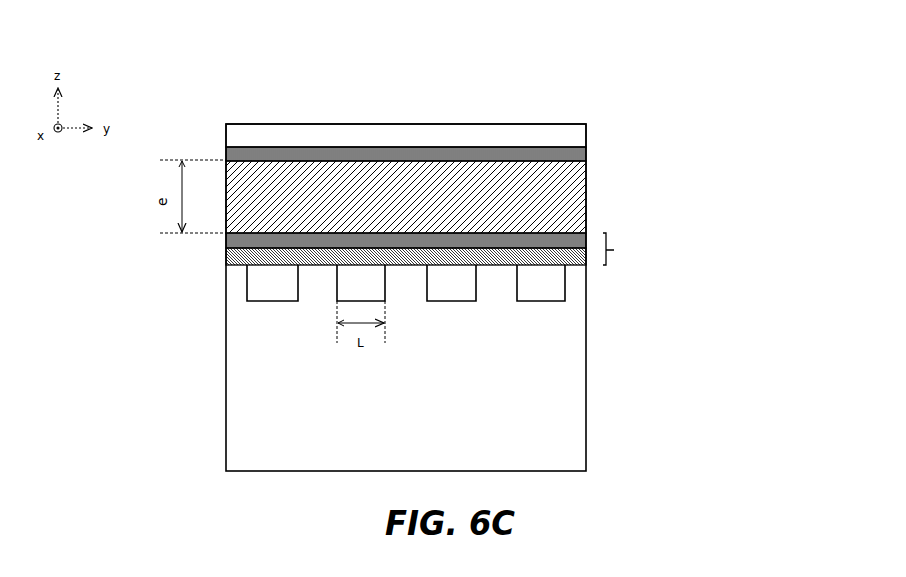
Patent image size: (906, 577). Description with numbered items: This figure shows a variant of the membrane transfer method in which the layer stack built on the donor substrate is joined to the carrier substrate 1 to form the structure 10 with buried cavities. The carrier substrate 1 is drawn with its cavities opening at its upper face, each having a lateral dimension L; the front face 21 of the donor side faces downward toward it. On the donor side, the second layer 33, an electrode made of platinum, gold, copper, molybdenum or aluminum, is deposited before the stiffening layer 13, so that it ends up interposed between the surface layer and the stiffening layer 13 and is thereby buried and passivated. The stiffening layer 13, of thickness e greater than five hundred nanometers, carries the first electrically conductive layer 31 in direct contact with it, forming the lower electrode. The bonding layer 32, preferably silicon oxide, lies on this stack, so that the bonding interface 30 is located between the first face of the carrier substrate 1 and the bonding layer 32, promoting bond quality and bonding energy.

The carrier substrate 1 is at (555, 451).
The structure 10 is at (450, 62).
The stiffening layer 13 is at (580, 173).
The front face 21 is at (442, 282).
The bonding interface 30 is at (628, 250).
The first electrically conductive layer 31 is at (226, 243).
The bonding layer 32 is at (226, 260).
The second layer 33 is at (587, 152).